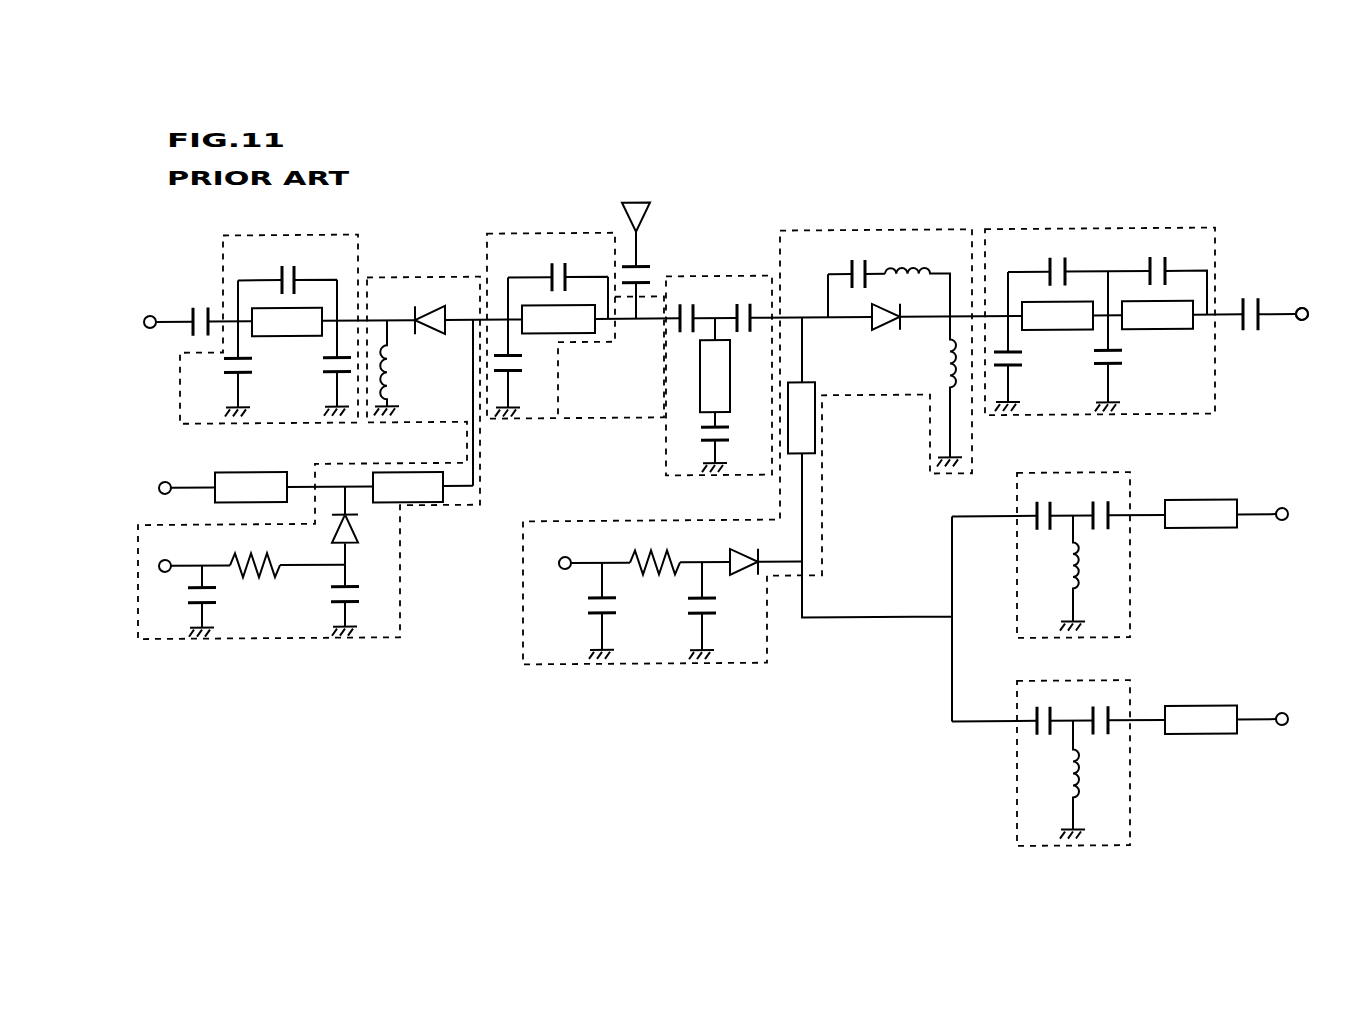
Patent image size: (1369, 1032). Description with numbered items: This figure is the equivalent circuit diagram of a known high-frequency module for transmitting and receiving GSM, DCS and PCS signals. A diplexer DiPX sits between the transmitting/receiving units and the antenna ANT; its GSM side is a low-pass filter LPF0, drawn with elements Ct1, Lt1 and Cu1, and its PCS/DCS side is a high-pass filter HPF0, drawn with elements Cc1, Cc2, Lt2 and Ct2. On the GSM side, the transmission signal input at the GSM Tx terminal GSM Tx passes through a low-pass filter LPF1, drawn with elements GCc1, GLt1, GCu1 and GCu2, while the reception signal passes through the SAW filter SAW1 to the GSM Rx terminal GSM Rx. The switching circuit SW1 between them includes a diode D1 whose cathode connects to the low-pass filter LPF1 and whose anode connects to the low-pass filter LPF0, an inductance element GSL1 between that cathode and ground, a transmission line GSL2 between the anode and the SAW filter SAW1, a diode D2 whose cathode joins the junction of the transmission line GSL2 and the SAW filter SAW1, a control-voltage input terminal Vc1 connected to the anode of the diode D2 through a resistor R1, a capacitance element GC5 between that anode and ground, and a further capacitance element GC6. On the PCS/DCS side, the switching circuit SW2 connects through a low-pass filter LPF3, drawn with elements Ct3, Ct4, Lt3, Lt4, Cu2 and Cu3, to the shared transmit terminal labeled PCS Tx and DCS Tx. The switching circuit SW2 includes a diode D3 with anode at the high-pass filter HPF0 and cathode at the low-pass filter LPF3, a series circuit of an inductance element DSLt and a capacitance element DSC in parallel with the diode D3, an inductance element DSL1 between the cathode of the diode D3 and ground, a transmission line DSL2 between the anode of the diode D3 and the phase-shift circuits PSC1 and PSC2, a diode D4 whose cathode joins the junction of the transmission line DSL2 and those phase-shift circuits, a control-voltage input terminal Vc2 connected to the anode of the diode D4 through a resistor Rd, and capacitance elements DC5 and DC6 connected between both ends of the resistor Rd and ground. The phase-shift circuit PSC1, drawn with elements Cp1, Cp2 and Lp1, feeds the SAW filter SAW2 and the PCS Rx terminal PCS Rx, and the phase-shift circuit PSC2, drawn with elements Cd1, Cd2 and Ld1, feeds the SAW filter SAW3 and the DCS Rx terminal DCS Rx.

The GSM Tx terminal GSM Tx is at (162, 315).
The GSM Rx terminal GSM Rx is at (149, 475).
The PCS/DCS Tx terminal PCS Tx is at (1299, 294).
The PCS/DCS Tx terminal DCS Tx is at (1322, 299).
The PCS Rx terminal PCS Rx is at (1312, 500).
The DCS Rx terminal DCS Rx is at (1312, 706).
The antenna ANT is at (650, 246).
The control-voltage input terminal Vc1 is at (158, 550).
The control-voltage input terminal Vc2 is at (559, 548).
The low-pass filter LPF1 is at (315, 232).
The capacitor GCc1 is at (287, 298).
The inductor GLt1 is at (287, 322).
The capacitor GCu1 is at (219, 387).
The capacitor GCu2 is at (319, 387).
The switching circuit SW1 is at (435, 272).
The diode D1 is at (430, 306).
The inductance element GSL1 is at (409, 367).
The transmission line GSL2 is at (408, 487).
The SAW filter SAW1 is at (251, 487).
The diode D2 is at (357, 525).
The capacitance element GC5 is at (364, 599).
The capacitor GC6 is at (221, 600).
The resistor R1 is at (255, 550).
The low-pass filter LPF0 is at (545, 235).
The diplexer DiPX is at (612, 428).
The capacitor Ct1 is at (558, 296).
The inductor Lt1 is at (558, 321).
The capacitor Cu1 is at (523, 385).
The high-pass filter HPF0 is at (735, 265).
The capacitor Cc1 is at (685, 303).
The capacitor Cc2 is at (744, 303).
The inductor Lt2 is at (715, 365).
The capacitor Ct2 is at (733, 442).
The switching circuit SW2 is at (888, 235).
The capacitance element DSC is at (855, 274).
The inductance element DSLt is at (917, 273).
The diode D3 is at (886, 329).
The inductance element DSL1 is at (927, 391).
The transmission line DSL2 is at (801, 417).
The resistor Rd is at (655, 547).
The capacitance element DC5 is at (717, 610).
The capacitance element DC6 is at (617, 611).
The diode D4 is at (744, 575).
The low-pass filter LPF3 is at (1120, 222).
The capacitor Ct3 is at (1058, 291).
The capacitor Ct4 is at (1157, 291).
The inductor Lt3 is at (1057, 315).
The inductor Lt4 is at (1157, 315).
The capacitor Cu2 is at (1023, 381).
The capacitor Cu3 is at (1123, 380).
The phase-shift circuit PSC1 is at (1093, 466).
The capacitor Cp1 is at (1042, 502).
The capacitor Cp2 is at (1100, 501).
The inductor Lp1 is at (1091, 572).
The SAW filter SAW2 is at (1201, 513).
The phase-shift circuit PSC2 is at (1093, 674).
The capacitor Cd1 is at (1042, 709).
The capacitor Cd2 is at (1100, 708).
The inductor Ld1 is at (1091, 779).
The SAW filter SAW3 is at (1201, 719).